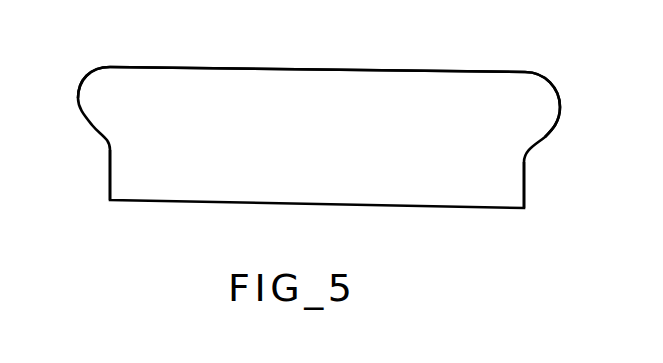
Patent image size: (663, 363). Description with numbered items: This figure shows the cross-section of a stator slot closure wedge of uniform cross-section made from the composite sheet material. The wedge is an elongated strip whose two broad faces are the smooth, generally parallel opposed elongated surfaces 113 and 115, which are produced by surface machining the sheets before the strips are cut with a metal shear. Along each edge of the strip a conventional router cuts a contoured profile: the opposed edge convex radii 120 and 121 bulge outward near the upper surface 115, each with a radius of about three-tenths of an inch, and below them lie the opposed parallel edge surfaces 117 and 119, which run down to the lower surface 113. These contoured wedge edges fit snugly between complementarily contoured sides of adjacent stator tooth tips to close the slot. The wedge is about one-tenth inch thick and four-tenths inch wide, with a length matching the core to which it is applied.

The elongated surface 113 is at (440, 207).
The elongated surface 115 is at (380, 67).
The parallel edge surface 117 is at (524, 178).
The parallel edge surface 119 is at (110, 175).
The edge convex radius 120 is at (565, 105).
The edge convex radius 121 is at (78, 102).